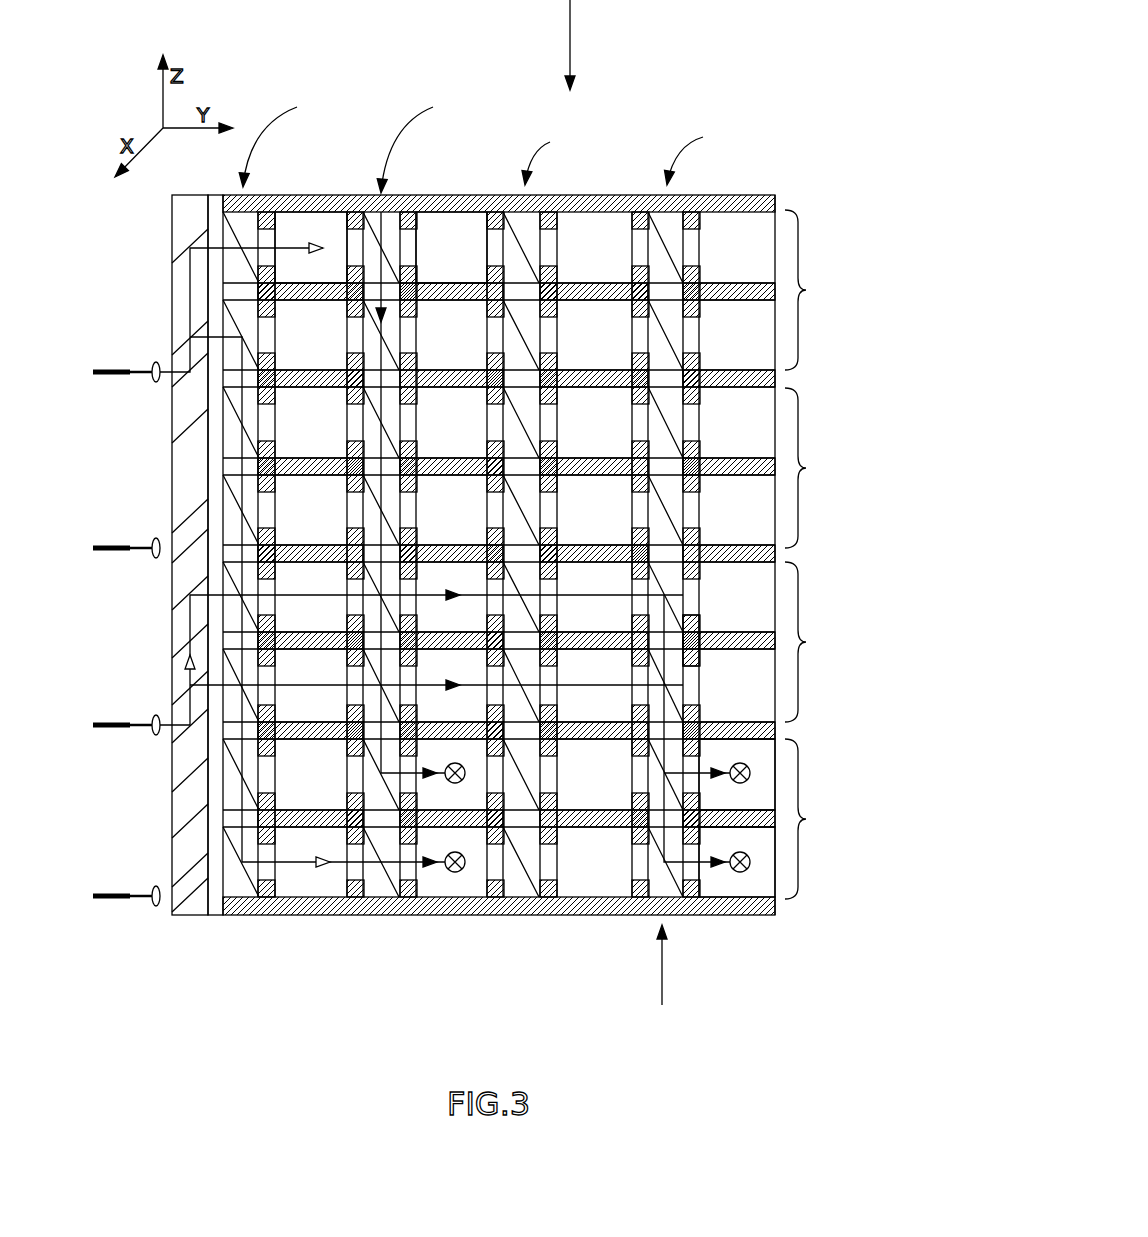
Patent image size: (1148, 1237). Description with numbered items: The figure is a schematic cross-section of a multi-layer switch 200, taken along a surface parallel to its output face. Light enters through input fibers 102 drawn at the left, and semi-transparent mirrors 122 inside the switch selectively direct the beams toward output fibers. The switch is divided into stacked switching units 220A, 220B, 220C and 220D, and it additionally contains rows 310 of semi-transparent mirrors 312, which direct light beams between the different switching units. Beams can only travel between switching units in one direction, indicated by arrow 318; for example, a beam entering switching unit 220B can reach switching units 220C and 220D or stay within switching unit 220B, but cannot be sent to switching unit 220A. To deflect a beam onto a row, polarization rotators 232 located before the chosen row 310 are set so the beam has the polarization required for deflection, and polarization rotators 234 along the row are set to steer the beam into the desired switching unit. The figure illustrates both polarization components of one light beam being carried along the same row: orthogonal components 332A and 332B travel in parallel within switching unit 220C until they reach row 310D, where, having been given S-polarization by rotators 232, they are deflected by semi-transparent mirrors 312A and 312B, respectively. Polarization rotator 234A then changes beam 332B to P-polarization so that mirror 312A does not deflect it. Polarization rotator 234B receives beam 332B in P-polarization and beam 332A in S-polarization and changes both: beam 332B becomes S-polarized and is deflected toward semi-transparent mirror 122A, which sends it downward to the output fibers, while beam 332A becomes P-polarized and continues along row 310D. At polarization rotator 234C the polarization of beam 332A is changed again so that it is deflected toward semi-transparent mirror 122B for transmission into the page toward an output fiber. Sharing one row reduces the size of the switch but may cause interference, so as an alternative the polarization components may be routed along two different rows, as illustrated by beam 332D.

The input fiber 102 is at (112, 368).
The semi-transparent mirror 122 is at (300, 230).
The semi-transparent mirror 122A is at (747, 793).
The semi-transparent mirror 122B is at (747, 883).
The multi-layer switch 200 is at (750, 74).
The switching unit 220A is at (561, 290).
The switching unit 220B is at (561, 468).
The switching unit 220C is at (562, 642).
The switching unit 220D is at (562, 819).
The polarization rotator 232 is at (365, 242).
The polarization rotator 234 is at (495, 257).
The polarization rotator 234A is at (700, 640).
The polarization rotator 234B is at (640, 745).
The polarization rotator 234C is at (660, 822).
The row of semi-transparent mirrors 310 is at (492, 142).
The row of semi-transparent mirrors 310D is at (663, 980).
The semi-transparent mirror 312 is at (523, 333).
The semi-transparent mirror 312A is at (687, 692).
The semi-transparent mirror 312B is at (673, 608).
The arrow 318 is at (572, 32).
The polarized beam 332A is at (282, 685).
The polarized beam 332B is at (282, 595).
The beam 332D is at (383, 407).